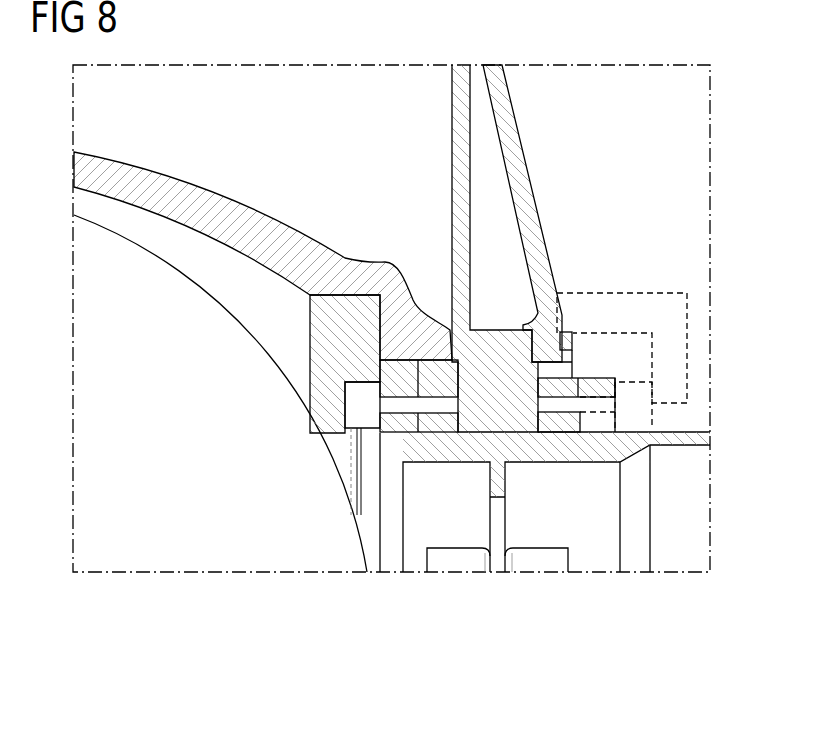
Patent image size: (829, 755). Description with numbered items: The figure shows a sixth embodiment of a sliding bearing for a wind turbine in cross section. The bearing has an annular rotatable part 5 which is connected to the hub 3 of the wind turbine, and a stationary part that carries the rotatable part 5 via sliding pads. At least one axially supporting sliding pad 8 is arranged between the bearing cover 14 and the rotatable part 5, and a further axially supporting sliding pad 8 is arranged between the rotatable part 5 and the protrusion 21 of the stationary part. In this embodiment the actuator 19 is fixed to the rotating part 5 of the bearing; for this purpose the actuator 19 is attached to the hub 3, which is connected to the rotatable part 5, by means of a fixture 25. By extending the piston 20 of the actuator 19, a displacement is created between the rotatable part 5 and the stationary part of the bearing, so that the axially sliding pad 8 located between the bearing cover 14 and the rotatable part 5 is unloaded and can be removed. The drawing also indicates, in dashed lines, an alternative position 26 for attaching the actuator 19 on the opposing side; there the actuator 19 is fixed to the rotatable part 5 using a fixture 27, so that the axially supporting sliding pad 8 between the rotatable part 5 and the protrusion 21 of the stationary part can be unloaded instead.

The hub 3 is at (253, 228).
The rotatable part 5 is at (478, 423).
The axially supporting sliding pad 8 is at (443, 423).
The bearing cover 14 is at (385, 447).
The actuator 19 is at (357, 410).
The piston 20 is at (393, 400).
The protrusion 21 is at (595, 388).
The fixture 25 is at (318, 343).
The alternative position 26 is at (650, 418).
The fixture 27 is at (675, 334).